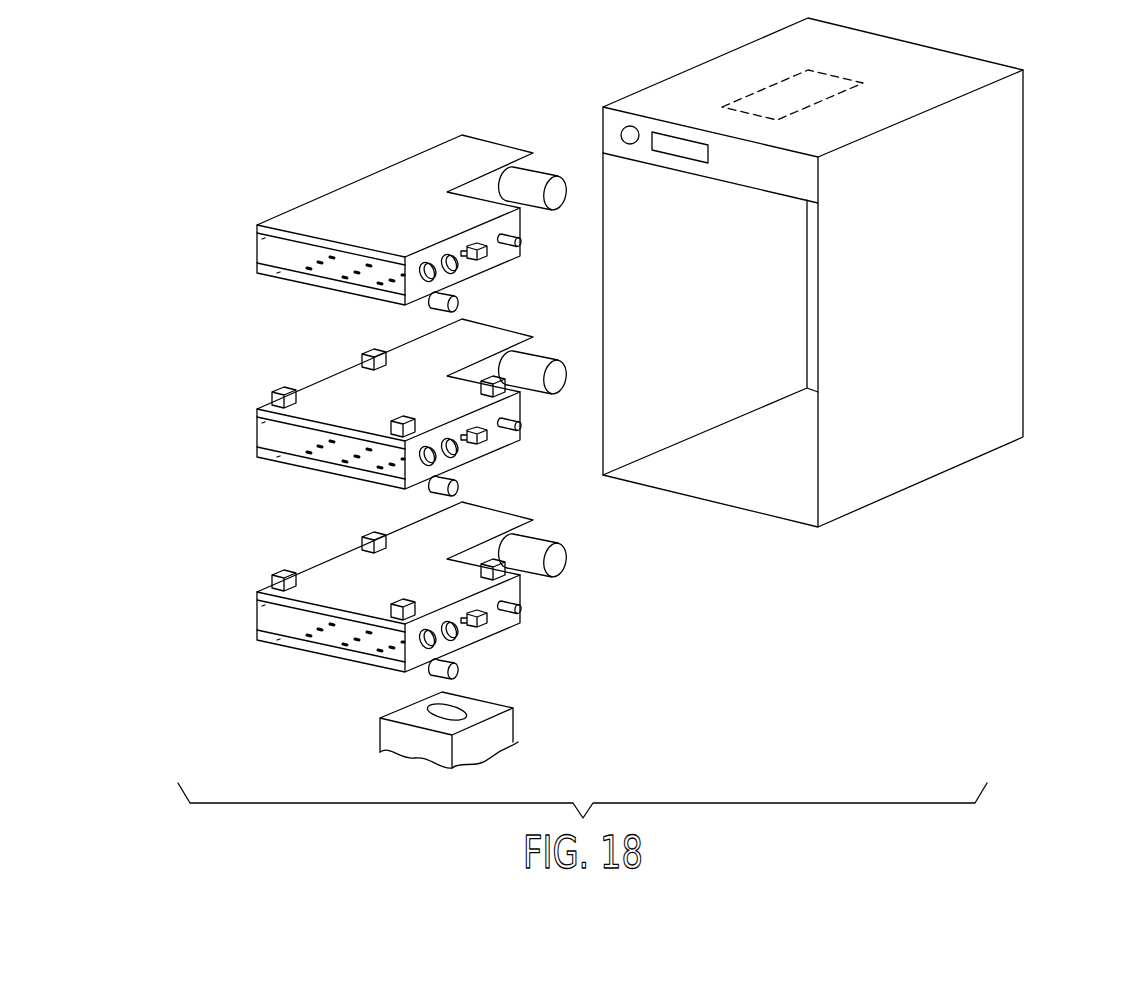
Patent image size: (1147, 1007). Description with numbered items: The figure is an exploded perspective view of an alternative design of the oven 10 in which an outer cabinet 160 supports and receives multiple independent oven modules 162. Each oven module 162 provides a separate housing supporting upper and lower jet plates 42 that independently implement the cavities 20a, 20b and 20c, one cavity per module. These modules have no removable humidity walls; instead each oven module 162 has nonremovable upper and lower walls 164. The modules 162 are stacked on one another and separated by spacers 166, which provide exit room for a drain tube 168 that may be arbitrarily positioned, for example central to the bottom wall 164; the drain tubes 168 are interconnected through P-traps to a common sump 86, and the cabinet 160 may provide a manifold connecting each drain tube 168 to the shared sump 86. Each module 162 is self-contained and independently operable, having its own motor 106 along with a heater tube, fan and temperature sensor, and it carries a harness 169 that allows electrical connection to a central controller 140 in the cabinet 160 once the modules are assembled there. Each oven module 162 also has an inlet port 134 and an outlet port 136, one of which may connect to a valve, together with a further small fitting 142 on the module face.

The oven 10 is at (862, 272).
The outer cabinet 160 is at (1004, 227).
The central controller 140 is at (765, 88).
The oven module 162 is at (252, 223).
The upper and lower walls 164 is at (398, 174).
The jet plates 42 is at (277, 273).
The cavity 20a is at (339, 258).
The cavity 20b is at (339, 442).
The cavity 20c is at (339, 626).
The motor 106 is at (543, 178).
The drain tube 168 is at (432, 306).
The small conduit 142 is at (522, 238).
The inlet port 134 is at (417, 265).
The outlet port 136 is at (457, 271).
The harness 169 is at (472, 248).
The spacers 166 is at (276, 389).
The sump 86 is at (514, 722).